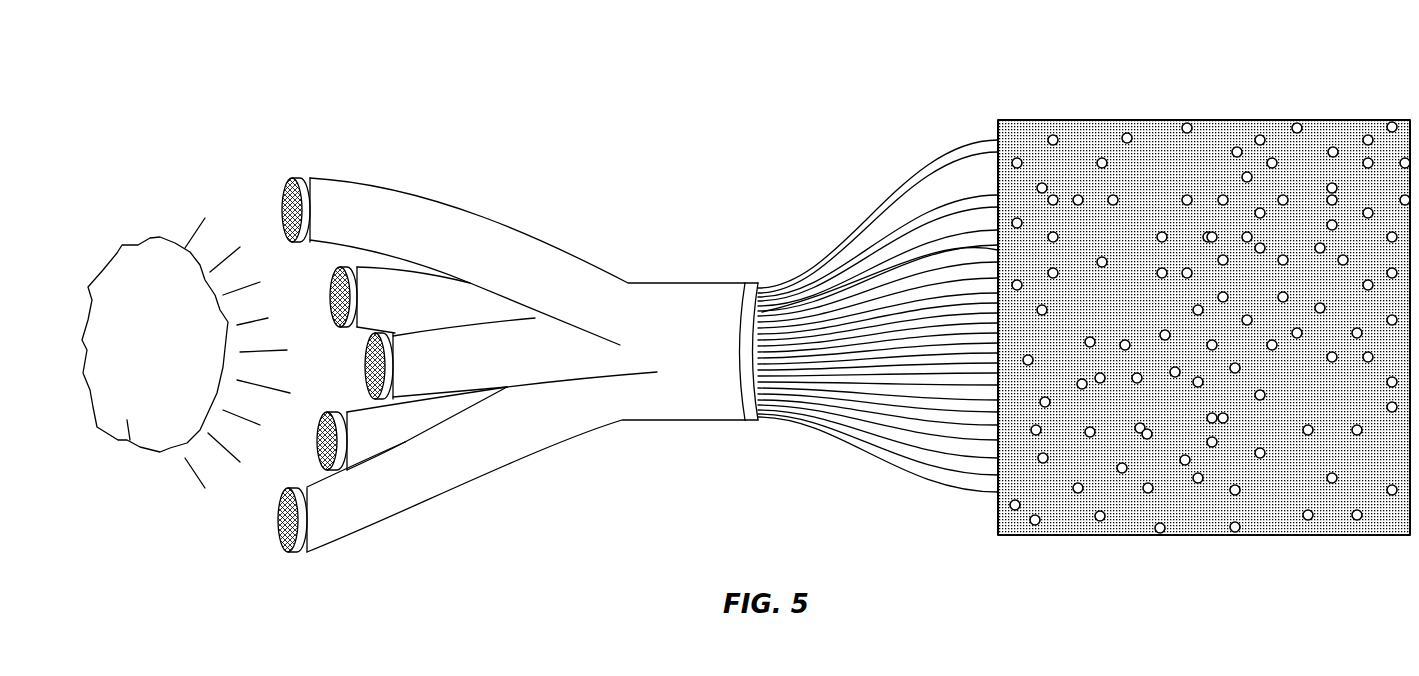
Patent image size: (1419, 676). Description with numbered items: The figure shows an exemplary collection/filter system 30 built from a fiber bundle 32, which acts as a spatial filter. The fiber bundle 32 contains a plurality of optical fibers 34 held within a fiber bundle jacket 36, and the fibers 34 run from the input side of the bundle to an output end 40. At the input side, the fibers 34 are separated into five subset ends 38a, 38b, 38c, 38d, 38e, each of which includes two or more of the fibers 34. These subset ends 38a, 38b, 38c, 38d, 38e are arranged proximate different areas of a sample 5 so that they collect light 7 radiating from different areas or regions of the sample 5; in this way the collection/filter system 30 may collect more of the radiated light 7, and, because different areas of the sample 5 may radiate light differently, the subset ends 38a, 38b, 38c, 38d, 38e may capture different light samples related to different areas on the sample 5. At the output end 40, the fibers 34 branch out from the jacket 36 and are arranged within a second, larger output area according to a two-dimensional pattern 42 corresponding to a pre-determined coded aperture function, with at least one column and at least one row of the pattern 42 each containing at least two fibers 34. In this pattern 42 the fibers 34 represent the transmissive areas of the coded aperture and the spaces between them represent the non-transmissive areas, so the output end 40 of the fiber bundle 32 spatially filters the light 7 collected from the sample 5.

The sample 5 is at (122, 443).
The light 7 is at (200, 200).
The collection/filter system 30 is at (781, 82).
The fiber bundle 32 is at (662, 437).
The optical fibers 34 is at (284, 205).
The fiber bundle jacket 36 is at (673, 317).
The subset end 38a is at (303, 180).
The subset end 38b is at (332, 326).
The subset end 38c is at (365, 378).
The subset end 38d is at (320, 428).
The subset end 38e is at (280, 547).
The output end 40 is at (1205, 282).
The two-dimensional pattern 42 is at (1352, 119).